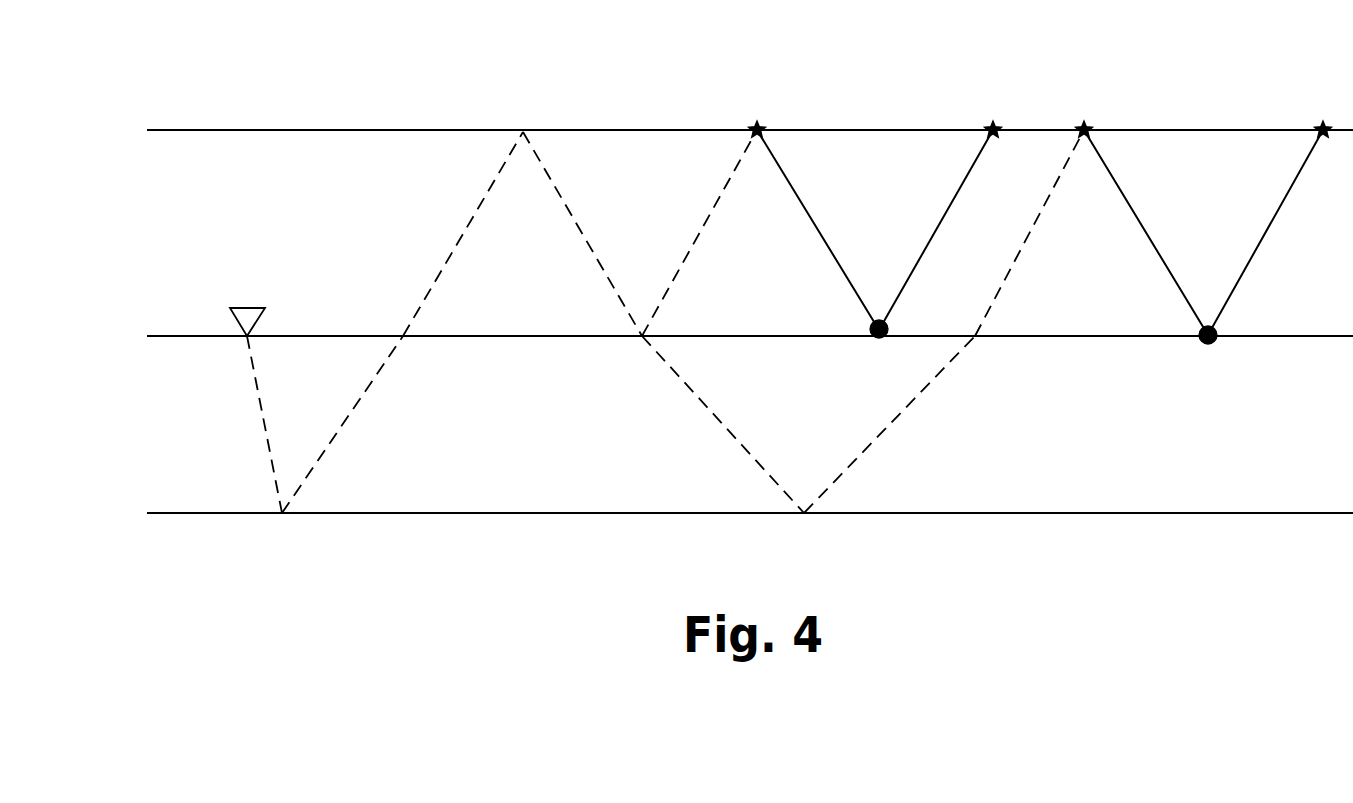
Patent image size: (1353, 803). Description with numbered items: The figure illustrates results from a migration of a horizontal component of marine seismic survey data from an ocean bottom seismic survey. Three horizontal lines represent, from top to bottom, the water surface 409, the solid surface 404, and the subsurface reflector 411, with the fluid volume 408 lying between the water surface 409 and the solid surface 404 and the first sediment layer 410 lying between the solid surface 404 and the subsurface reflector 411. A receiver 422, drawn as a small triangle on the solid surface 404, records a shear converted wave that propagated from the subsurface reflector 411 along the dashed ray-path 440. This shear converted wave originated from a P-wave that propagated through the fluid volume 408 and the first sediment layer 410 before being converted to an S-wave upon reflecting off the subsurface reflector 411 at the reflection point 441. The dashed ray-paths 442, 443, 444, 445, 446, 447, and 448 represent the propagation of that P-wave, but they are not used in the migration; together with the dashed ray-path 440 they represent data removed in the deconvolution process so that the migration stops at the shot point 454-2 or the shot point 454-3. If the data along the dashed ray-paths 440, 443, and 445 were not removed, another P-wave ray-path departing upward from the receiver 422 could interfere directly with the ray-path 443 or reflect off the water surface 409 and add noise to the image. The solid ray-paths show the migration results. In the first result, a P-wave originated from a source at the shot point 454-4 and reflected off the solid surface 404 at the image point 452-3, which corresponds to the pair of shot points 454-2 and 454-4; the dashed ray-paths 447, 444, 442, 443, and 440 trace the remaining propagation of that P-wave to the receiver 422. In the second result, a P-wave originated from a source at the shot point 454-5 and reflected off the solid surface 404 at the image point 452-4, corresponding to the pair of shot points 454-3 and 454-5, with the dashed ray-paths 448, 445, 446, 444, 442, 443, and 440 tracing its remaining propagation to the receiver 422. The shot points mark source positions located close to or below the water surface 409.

The solid surface 404 is at (185, 340).
The fluid volume 408 is at (268, 199).
The water surface 409 is at (343, 130).
The first sediment layer 410 is at (1180, 475).
The subsurface reflector 411 is at (190, 516).
The receiver 422 is at (247, 306).
The dashed ray-path 440 is at (265, 432).
The reflection point 441 is at (283, 516).
The dashed ray-path 442 is at (437, 268).
The dashed ray-path 443 is at (340, 432).
The dashed ray-path 444 is at (568, 216).
The dashed ray-path 445 is at (925, 390).
The dashed ray-path 446 is at (708, 405).
The dashed ray-path 447 is at (690, 244).
The dashed ray-path 448 is at (1005, 282).
The image point 452-3 is at (870, 324).
The image point 452-4 is at (1200, 332).
The shot point 454-2 is at (753, 104).
The shot point 454-3 is at (1081, 104).
The shot point 454-4 is at (991, 106).
The shot point 454-5 is at (1320, 104).